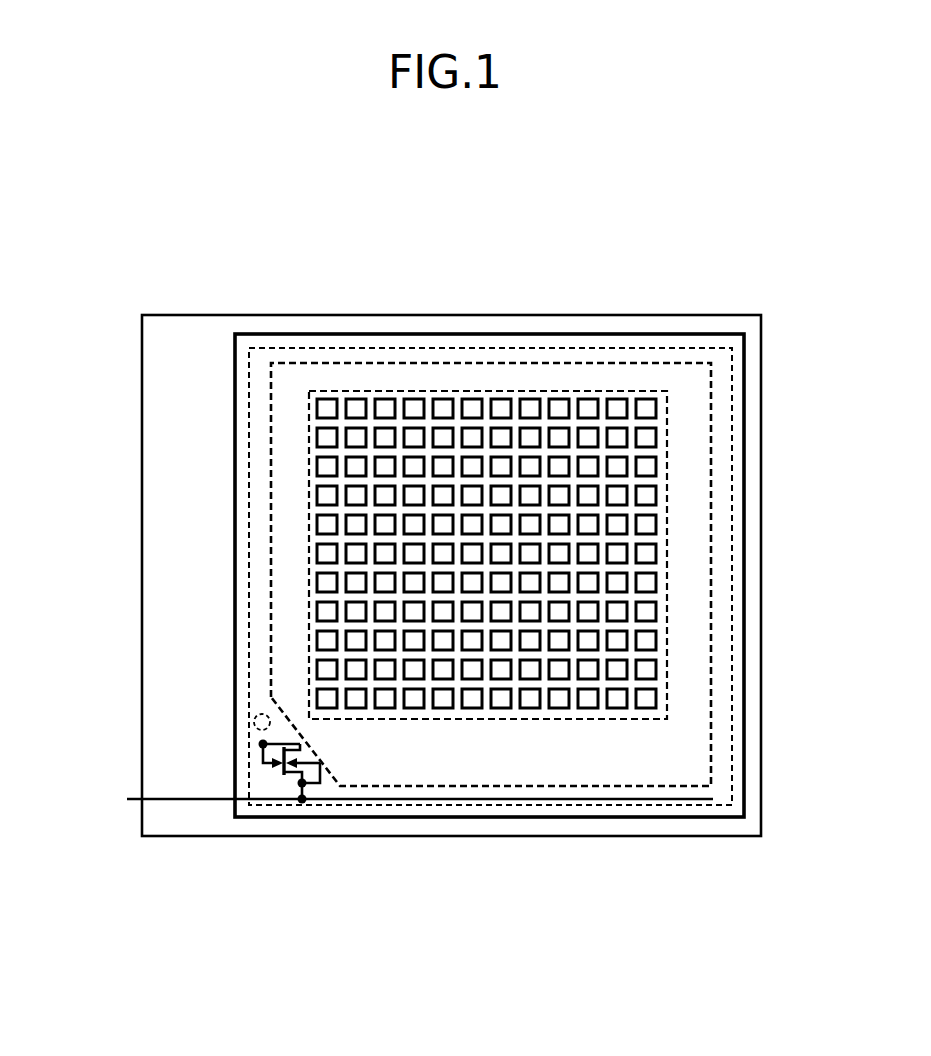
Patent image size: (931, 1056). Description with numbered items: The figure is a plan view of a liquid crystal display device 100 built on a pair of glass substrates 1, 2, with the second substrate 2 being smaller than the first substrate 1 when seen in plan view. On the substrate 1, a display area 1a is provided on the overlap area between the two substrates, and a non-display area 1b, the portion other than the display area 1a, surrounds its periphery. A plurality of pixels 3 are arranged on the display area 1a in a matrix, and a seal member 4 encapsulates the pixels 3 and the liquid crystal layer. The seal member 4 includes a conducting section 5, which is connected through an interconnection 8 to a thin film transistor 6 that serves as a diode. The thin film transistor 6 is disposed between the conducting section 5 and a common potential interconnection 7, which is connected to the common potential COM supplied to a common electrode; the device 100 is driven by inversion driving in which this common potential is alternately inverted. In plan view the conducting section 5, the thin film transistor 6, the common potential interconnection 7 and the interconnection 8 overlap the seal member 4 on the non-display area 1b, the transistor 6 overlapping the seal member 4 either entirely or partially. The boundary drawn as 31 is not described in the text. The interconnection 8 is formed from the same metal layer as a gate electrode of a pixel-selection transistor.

The liquid crystal display device 100 is at (718, 200).
The glass substrate 1 is at (688, 315).
The display area 1a is at (400, 391).
The non-display area 1b is at (201, 337).
The glass substrate 2 is at (605, 334).
The pixel region boundary 31 is at (643, 348).
The seal member 4 is at (303, 362).
The pixels 3 is at (474, 406).
The conducting section 5 is at (254, 720).
The interconnection 8 is at (262, 742).
The common potential COM is at (387, 800).
The common potential interconnection 7 is at (202, 800).
The thin film transistor 6 is at (283, 785).